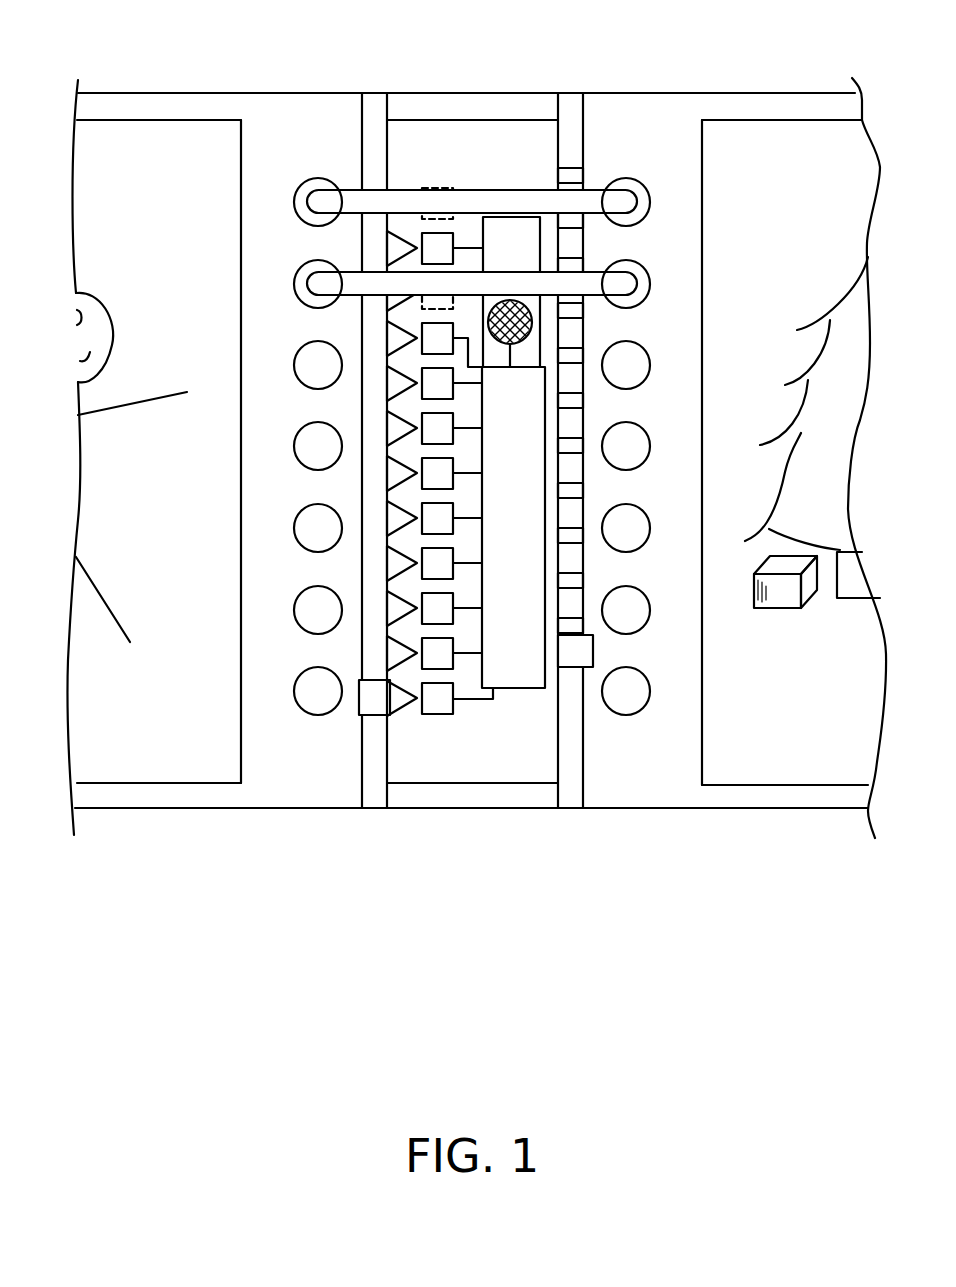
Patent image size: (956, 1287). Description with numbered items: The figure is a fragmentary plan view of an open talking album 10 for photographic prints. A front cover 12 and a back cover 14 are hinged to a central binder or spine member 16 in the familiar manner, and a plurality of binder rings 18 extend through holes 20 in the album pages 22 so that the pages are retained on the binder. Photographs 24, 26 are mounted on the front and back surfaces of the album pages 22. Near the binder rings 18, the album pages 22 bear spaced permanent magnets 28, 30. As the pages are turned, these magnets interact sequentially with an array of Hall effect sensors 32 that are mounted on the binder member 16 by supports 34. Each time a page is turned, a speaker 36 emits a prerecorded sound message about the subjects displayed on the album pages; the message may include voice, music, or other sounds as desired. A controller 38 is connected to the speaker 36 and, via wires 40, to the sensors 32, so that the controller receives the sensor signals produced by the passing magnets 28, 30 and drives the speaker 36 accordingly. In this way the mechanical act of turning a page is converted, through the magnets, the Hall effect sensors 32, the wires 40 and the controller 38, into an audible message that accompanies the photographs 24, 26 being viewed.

The talking album 10 is at (103, 952).
The front cover 12 is at (380, 90).
The back cover 14 is at (568, 93).
The binder member 16 is at (497, 118).
The binder rings 18 is at (478, 193).
The holes 20 is at (313, 178).
The album pages 22 is at (157, 810).
The photograph 24 is at (242, 760).
The photograph 26 is at (702, 760).
The permanent magnet 28 is at (358, 712).
The permanent magnet 30 is at (578, 670).
The Hall effect sensors 32 is at (457, 738).
The supports 34 is at (405, 712).
The speaker 36 is at (533, 320).
The controller 38 is at (530, 378).
The wires 40 is at (470, 702).